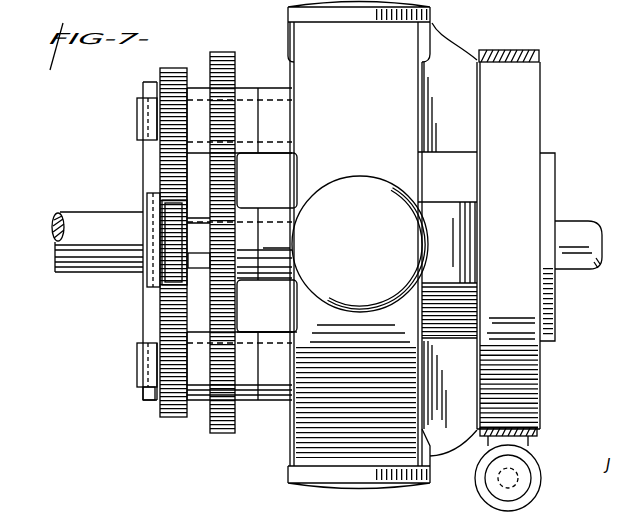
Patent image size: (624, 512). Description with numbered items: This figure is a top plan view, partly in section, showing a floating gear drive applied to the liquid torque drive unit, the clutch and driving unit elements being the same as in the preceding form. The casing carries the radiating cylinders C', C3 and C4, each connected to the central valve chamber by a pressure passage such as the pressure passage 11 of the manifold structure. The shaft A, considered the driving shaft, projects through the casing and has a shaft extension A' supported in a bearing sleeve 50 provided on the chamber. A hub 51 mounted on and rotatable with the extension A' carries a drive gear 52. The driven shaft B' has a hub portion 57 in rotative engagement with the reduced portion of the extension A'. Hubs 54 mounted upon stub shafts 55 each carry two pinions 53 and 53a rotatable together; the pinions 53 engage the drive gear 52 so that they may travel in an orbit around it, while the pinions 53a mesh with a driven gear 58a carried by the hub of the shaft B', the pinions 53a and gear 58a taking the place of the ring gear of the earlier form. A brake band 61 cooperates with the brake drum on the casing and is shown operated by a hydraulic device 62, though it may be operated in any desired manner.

The pressure passage 11 is at (444, 50).
The bearing sleeve 50 is at (252, 282).
The hub 51 is at (248, 305).
The drive gear 52 is at (226, 199).
The pinion 53 is at (223, 50).
The pinion 53a is at (170, 69).
The hub 54 is at (250, 88).
The stub shaft 55 is at (274, 110).
The hub portion 57 is at (150, 200).
The driven gear 58a is at (167, 250).
The brake band 61 is at (513, 55).
The hydraulic device 62 is at (535, 470).
The shaft A is at (578, 234).
The shaft extension A' is at (239, 232).
The driven shaft B' is at (128, 228).
The cylinder C' is at (360, 244).
The cylinder C3 is at (382, 234).
The cylinder C4 is at (302, 456).